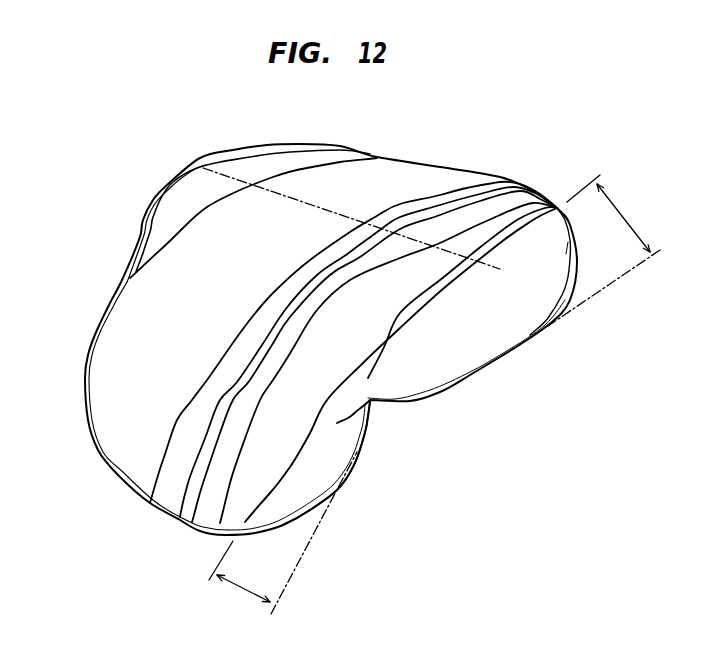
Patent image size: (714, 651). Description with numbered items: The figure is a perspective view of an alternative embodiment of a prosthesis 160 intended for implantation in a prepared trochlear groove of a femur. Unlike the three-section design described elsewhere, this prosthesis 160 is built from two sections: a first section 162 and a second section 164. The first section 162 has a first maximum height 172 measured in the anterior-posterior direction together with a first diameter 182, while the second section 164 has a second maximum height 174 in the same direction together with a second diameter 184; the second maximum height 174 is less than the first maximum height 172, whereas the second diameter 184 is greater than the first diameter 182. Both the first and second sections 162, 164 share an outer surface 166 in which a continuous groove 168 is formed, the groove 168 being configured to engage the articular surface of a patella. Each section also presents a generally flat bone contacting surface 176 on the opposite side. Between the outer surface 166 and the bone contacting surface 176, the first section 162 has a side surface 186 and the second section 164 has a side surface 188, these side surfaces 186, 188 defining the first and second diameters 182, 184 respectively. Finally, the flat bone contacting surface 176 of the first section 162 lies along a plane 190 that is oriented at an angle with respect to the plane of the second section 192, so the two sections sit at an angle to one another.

The prosthesis 160 is at (107, 192).
The first section 162 is at (130, 467).
The second section 164 is at (413, 180).
The outer surface 166 is at (157, 292).
The continuous groove 168 is at (517, 183).
The first maximum height 172 is at (243, 590).
The second maximum height 174 is at (622, 213).
The bone contacting surface 176 is at (368, 425).
The first diameter 182 is at (122, 395).
The second diameter 184 is at (297, 202).
The side surface 186 is at (338, 464).
The side surface 188 is at (473, 343).
The plane 190 is at (303, 553).
The plane of the second section 192 is at (607, 290).